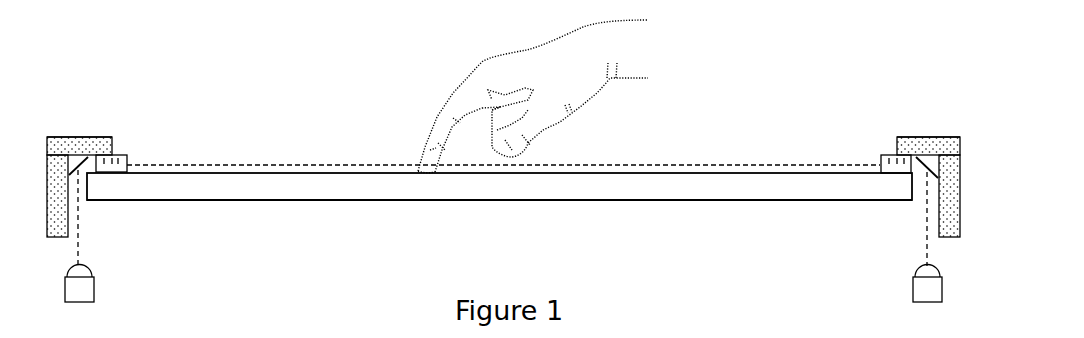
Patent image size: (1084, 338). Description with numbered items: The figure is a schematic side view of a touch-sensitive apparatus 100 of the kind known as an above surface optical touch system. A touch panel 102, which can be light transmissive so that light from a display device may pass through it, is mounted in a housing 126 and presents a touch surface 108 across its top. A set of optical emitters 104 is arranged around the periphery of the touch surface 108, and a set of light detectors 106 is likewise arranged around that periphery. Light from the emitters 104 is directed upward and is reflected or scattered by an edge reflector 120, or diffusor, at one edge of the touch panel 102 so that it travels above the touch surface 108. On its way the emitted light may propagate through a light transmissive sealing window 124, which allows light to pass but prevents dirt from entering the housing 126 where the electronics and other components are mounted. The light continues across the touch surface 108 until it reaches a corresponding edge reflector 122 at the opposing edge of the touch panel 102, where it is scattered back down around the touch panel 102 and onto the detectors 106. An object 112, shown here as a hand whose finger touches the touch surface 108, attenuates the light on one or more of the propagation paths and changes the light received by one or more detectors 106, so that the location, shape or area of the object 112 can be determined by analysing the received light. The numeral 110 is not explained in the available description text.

The touch-sensitive apparatus 100 is at (316, 78).
The touch panel 102 is at (247, 175).
The optical emitters 104 is at (94, 290).
The light detectors 106 is at (913, 292).
The touch surface 108 is at (665, 173).
The display panel 110 is at (407, 200).
The object 112 is at (638, 45).
The edge reflector 120 is at (83, 153).
The edge reflector 122 is at (927, 153).
The light transmissive sealing window 124 is at (127, 161).
The housing 126 is at (113, 147).